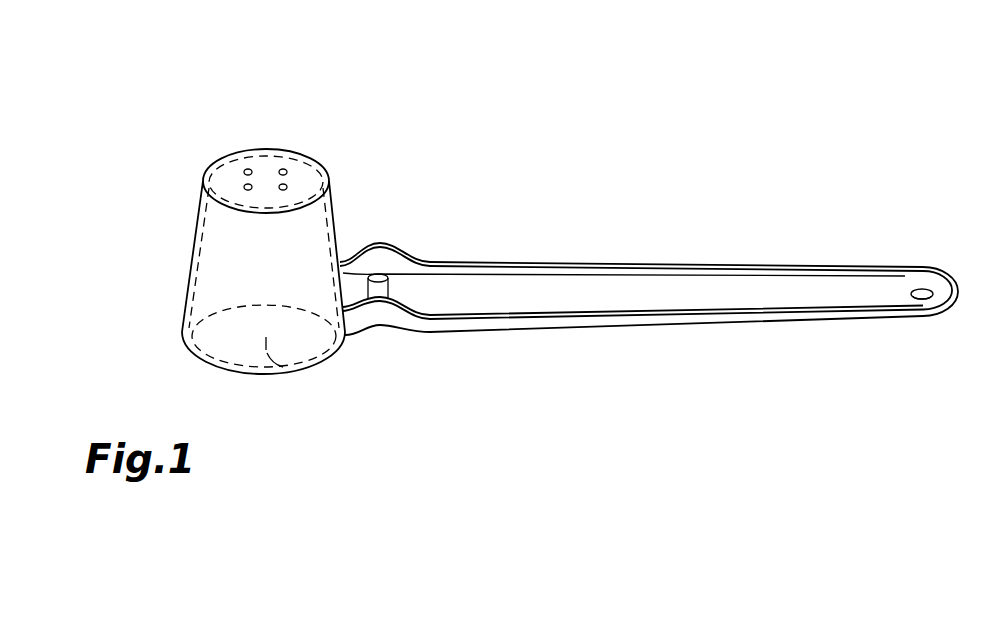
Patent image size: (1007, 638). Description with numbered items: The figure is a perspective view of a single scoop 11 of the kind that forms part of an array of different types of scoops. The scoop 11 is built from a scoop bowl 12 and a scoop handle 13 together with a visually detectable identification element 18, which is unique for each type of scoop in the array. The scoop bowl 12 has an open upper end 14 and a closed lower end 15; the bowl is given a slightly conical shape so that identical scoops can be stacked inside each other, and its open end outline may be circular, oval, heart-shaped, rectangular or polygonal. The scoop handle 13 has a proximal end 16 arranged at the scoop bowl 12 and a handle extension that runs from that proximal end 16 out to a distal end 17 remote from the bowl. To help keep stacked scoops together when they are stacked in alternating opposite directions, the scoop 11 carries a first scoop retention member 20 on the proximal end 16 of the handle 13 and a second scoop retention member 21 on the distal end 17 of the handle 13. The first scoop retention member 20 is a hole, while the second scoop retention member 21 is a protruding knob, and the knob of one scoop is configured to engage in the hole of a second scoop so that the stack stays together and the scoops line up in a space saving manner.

The scoop 11 is at (910, 97).
The scoop bowl 12 is at (217, 253).
The scoop handle 13 is at (707, 265).
The open upper end 14 is at (286, 369).
The closed lower end 15 is at (295, 170).
The proximal end 16 is at (420, 295).
The distal end 17 is at (898, 288).
The visually detectable identification element 18 is at (237, 177).
The first scoop retention member 20 is at (380, 277).
The second scoop retention member 21 is at (923, 290).